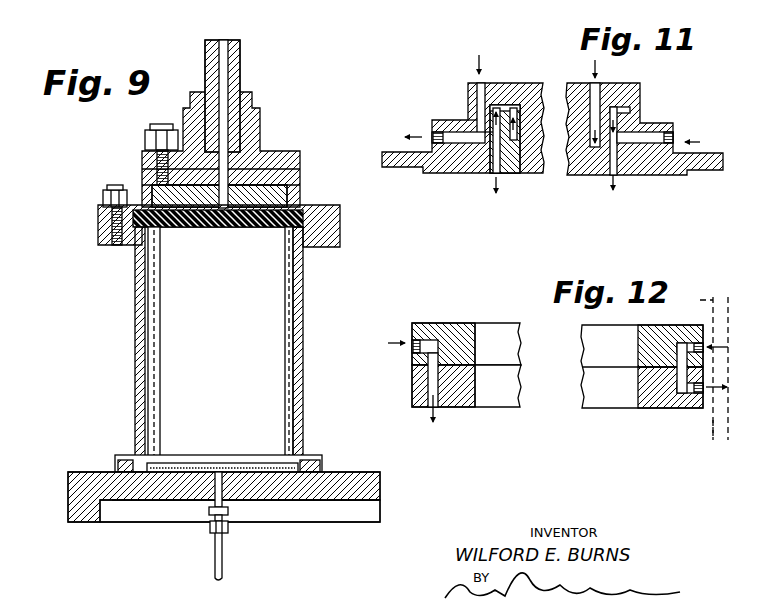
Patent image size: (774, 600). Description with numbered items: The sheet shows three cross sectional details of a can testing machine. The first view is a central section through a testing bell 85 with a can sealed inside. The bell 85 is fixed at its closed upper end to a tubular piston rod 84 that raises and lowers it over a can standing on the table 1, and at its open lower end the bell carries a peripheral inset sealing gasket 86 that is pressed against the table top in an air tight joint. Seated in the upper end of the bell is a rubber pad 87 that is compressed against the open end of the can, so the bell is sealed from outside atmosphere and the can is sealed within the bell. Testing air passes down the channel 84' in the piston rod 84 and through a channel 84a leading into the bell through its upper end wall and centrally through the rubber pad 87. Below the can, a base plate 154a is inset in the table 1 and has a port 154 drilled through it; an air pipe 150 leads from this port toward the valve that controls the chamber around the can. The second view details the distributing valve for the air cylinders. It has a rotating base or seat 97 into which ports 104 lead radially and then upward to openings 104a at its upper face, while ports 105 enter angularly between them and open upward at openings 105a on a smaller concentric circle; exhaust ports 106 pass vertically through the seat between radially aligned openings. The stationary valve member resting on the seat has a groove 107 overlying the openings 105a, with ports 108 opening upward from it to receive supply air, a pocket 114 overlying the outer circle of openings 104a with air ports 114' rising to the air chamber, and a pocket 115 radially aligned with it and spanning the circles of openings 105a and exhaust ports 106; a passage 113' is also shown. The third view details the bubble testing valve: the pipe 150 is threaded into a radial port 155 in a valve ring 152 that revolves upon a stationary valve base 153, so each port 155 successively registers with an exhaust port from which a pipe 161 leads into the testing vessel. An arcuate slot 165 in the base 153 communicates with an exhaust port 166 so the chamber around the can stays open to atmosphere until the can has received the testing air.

In FIG. 9, the piston rod 84 is at (251, 87).
In FIG. 9, the channel 84' is at (262, 124).
In FIG. 9, the channel 84a is at (257, 153).
In FIG. 9, the rubber pad 87 is at (195, 227).
In FIG. 9, the testing bell 85 is at (135, 378).
In FIG. 9, the table 1 is at (68, 482).
In FIG. 9, the port 154 is at (221, 477).
In FIG. 9, the sealing gasket 86 is at (307, 458).
In FIG. 9, the base plate 154a is at (187, 497).
In FIG. 9, the air pipe 150 is at (223, 557).
In FIG. 12, the air pipe 150 is at (707, 358).
In FIG. 11, the port 104 is at (460, 142).
In FIG. 11, the opening 104a is at (480, 120).
In FIG. 11, the pocket 114 is at (443, 100).
In FIG. 11, the air port 114' is at (452, 83).
In FIG. 11, the pocket 115 is at (503, 110).
In FIG. 11, the port 105 is at (518, 140).
In FIG. 11, the opening 105a is at (517, 115).
In FIG. 11, the exhaust port 106 is at (495, 158).
In FIG. 11, the rotating base 97 is at (647, 178).
In FIG. 11, the port 108 is at (594, 97).
In FIG. 11, the groove 107 is at (600, 108).
In FIG. 11, the horizontal passage 113' is at (669, 123).
In FIG. 12, the valve ring 152 is at (453, 323).
In FIG. 12, the valve base 153 is at (457, 408).
In FIG. 12, the radial port 155 is at (412, 347).
In FIG. 12, the arcuate slot 165 is at (428, 372).
In FIG. 12, the exhaust port 166 is at (428, 402).
In FIG. 12, the pipe 161 is at (717, 423).